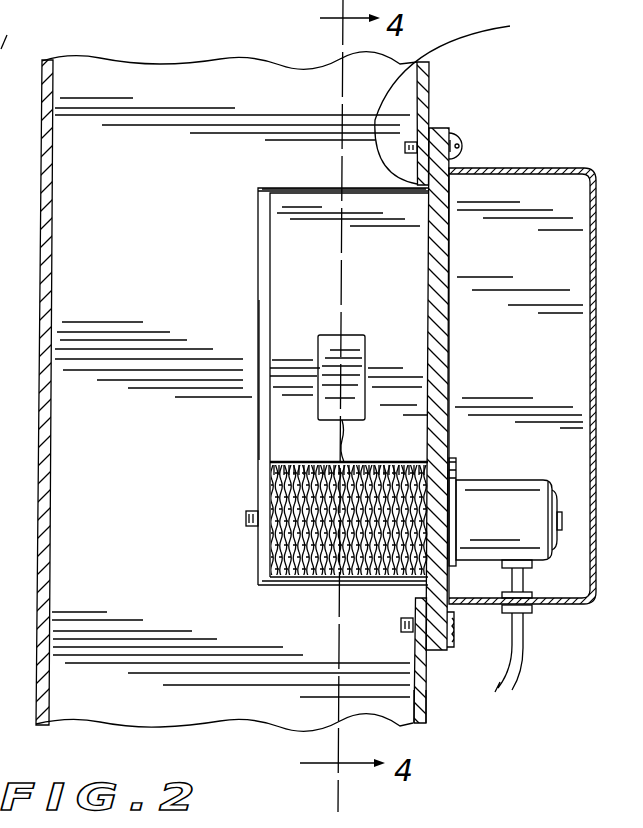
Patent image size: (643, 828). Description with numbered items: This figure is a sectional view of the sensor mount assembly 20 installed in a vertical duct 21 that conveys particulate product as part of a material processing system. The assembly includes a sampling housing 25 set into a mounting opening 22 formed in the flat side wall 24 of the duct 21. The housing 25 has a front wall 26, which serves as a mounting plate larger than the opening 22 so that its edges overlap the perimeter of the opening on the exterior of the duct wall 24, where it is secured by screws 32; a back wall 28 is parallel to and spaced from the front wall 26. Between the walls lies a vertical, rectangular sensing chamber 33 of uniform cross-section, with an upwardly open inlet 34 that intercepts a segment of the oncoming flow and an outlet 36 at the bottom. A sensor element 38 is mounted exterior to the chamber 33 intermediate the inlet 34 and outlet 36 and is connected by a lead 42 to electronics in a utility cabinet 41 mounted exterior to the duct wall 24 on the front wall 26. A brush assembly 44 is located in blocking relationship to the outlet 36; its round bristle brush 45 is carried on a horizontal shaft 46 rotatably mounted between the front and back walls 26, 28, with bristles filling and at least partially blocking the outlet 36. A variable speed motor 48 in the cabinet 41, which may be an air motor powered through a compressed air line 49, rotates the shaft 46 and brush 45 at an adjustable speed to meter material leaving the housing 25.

The sensor mount assembly 20 is at (247, 419).
The vertical duct 21 is at (441, 85).
The mounting opening 22 is at (463, 96).
The flat side wall 24 is at (427, 697).
The sampling housing 25 is at (249, 271).
The front wall 26 is at (450, 338).
The back wall 28 is at (257, 298).
The screws 32 is at (462, 146).
The sensing chamber 33 is at (384, 292).
The inlet 34 is at (335, 205).
The outlet 36 is at (303, 587).
The sensor element 38 is at (320, 357).
The utility cabinet 41 is at (537, 167).
The lead 42 is at (335, 443).
The brush assembly 44 is at (463, 463).
The bristle brush 45 is at (278, 545).
The shaft 46 is at (243, 517).
The variable speed motor 48 is at (513, 500).
The compressed air line 49 is at (522, 650).